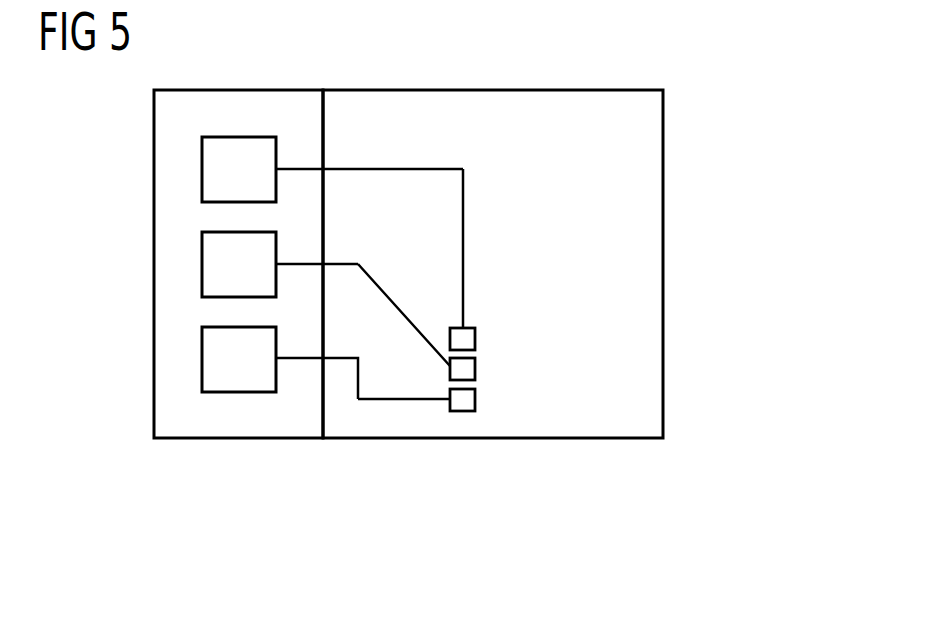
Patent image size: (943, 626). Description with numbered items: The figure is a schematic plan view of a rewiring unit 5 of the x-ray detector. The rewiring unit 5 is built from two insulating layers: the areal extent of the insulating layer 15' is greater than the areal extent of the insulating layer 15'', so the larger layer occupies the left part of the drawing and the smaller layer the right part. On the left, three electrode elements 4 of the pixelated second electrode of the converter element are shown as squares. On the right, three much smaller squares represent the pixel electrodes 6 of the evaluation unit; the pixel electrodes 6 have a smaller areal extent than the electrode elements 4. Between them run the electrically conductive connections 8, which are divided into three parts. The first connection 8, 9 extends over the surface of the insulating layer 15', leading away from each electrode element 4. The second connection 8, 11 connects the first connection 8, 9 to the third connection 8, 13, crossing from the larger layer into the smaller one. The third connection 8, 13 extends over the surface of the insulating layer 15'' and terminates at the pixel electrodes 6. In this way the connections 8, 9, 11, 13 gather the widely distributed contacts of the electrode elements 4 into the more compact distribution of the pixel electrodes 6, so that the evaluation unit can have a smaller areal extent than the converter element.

The electrode elements 4 is at (202, 170).
The rewiring unit 5 is at (482, 302).
The pixel electrodes 6 is at (476, 339).
The electrically conductive connections 8 is at (372, 277).
The first connection 9 is at (305, 264).
The second connection 11 is at (342, 264).
The third connection 13 is at (438, 169).
The insulating layer 15' is at (238, 302).
The insulating layer 15'' is at (493, 302).